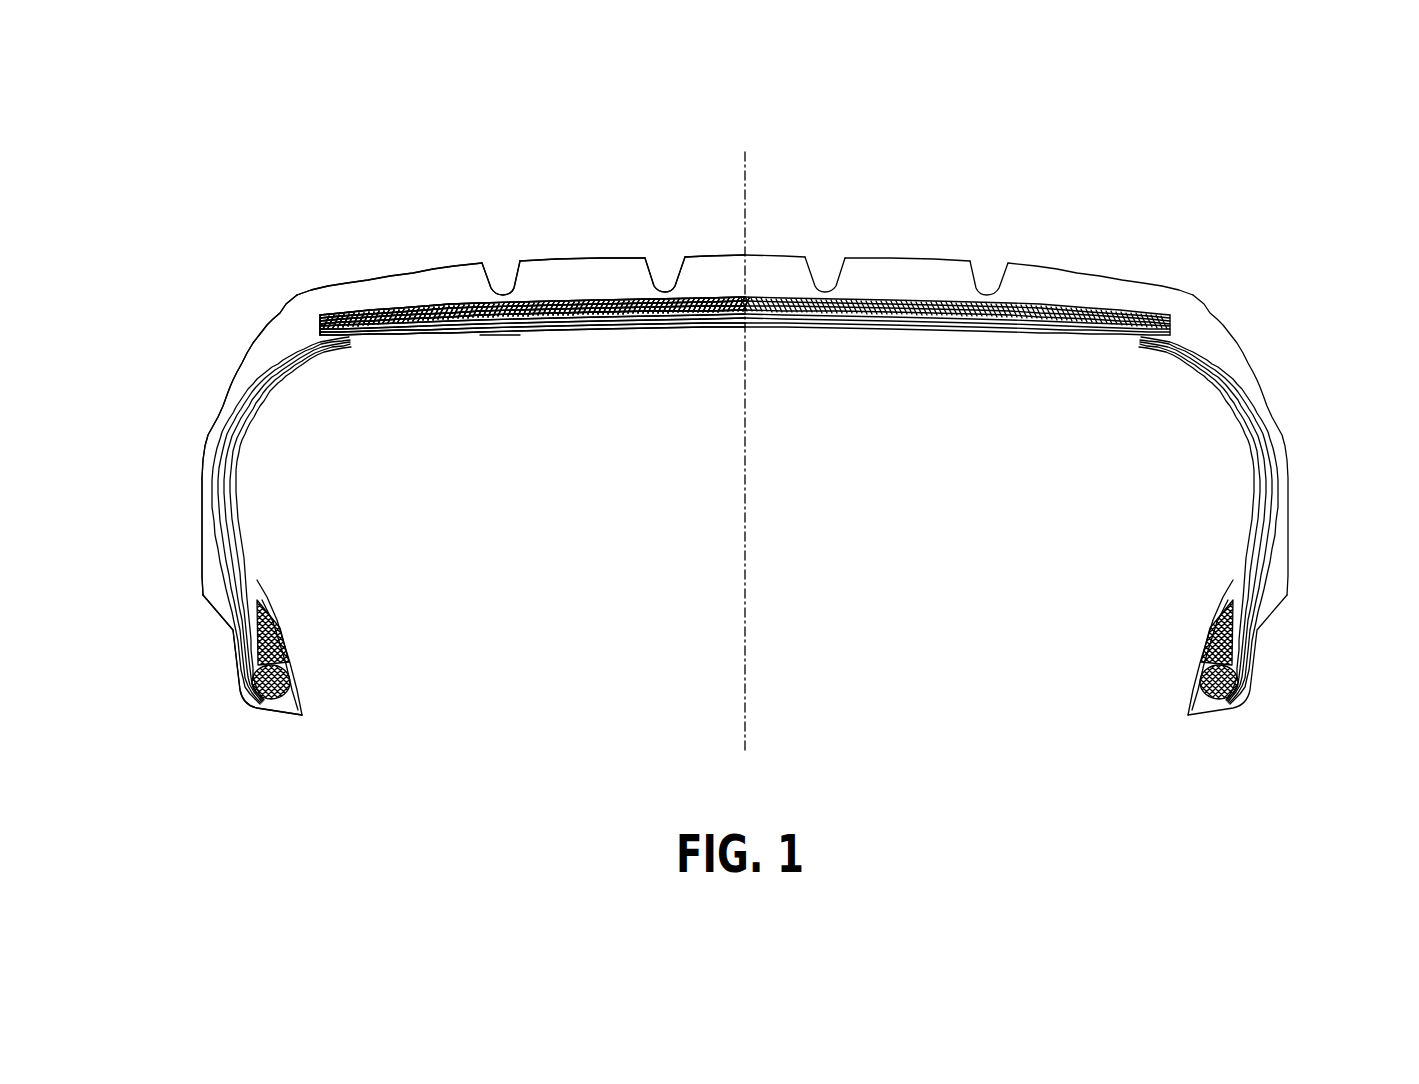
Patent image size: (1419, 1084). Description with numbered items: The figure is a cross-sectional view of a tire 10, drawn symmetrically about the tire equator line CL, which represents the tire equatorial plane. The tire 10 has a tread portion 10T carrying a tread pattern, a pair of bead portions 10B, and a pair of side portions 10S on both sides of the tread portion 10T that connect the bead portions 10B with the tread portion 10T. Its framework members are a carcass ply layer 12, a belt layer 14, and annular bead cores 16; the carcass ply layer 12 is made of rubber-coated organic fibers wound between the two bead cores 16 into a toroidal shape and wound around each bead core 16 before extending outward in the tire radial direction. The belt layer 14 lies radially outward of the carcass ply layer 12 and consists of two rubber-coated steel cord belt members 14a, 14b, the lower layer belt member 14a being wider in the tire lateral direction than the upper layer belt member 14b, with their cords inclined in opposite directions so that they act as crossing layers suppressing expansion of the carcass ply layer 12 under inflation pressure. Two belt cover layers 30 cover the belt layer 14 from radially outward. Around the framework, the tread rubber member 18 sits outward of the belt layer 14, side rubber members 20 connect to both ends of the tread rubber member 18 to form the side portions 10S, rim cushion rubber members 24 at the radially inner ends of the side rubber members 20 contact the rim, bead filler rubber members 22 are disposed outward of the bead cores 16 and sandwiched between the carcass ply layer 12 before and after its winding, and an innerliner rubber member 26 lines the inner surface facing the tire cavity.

The tire 10 is at (1157, 205).
The tread portion 10T is at (911, 240).
The side portions 10S is at (196, 481).
The bead portions 10B is at (316, 710).
The carcass ply layer 12 is at (277, 380).
The belt layer 14 is at (646, 410).
The lower layer belt member 14a is at (598, 305).
The upper layer belt member 14b is at (610, 305).
The bead cores 16 is at (258, 703).
The tread rubber member 18 is at (1140, 300).
The side rubber members 20 is at (232, 400).
The bead filler rubber members 22 is at (258, 626).
The rim cushion rubber members 24 is at (233, 636).
The innerliner rubber member 26 is at (497, 340).
The belt cover layers 30 is at (457, 307).
The tire equator line CL is at (747, 436).